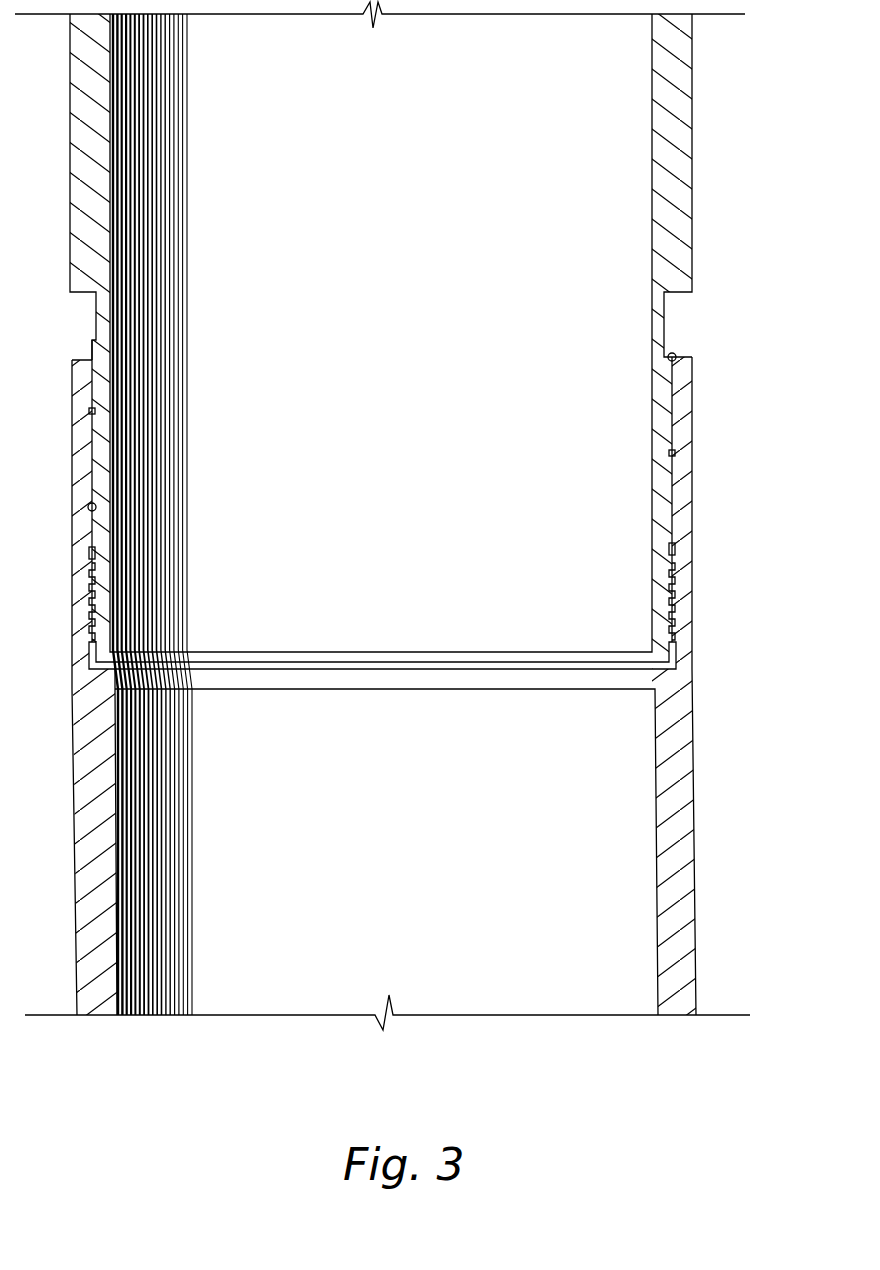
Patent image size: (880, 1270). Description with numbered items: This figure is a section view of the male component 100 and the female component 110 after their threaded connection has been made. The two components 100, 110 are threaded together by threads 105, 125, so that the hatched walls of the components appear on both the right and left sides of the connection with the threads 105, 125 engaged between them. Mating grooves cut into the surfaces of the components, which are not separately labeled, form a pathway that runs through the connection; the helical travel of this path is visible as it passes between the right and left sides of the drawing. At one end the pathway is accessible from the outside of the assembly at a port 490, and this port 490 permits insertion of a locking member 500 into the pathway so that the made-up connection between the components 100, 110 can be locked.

The male component 100 is at (694, 170).
The female component 110 is at (697, 824).
The threads 105 is at (678, 592).
The threads 125 is at (668, 596).
The port 490 is at (674, 354).
The locking member 500 is at (88, 410).